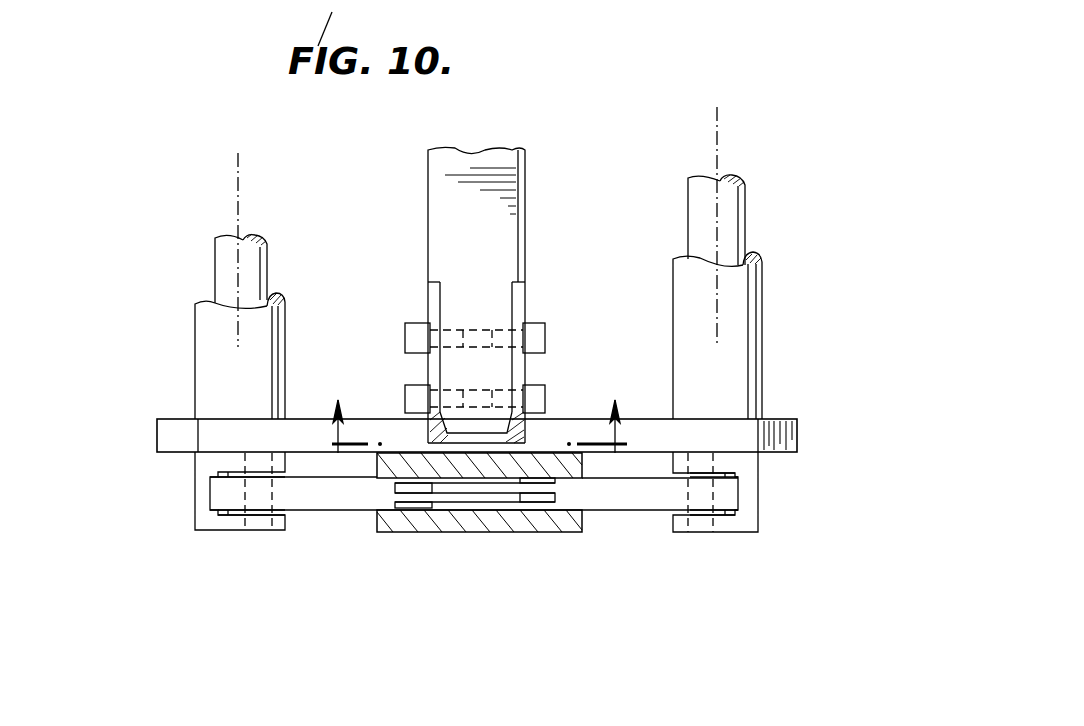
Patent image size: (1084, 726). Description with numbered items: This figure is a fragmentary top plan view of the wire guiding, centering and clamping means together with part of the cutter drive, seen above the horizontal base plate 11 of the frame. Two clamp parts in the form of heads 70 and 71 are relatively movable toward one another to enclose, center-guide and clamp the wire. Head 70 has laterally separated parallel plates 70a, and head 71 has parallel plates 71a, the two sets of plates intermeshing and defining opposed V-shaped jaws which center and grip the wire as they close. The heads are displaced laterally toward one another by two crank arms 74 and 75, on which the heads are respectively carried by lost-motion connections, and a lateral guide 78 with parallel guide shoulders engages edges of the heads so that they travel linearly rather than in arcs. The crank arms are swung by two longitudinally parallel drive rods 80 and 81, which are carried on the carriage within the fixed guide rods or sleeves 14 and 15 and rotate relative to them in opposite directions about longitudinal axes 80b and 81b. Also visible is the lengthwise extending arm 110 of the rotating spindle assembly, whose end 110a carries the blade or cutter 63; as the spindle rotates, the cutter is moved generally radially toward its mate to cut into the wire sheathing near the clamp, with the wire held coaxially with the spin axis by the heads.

The arm 110 is at (487, 165).
The end of arm 110a is at (450, 368).
The blade or cutter 63 is at (480, 430).
The longitudinal axis 80b is at (238, 183).
The longitudinal axis 81b is at (718, 140).
The drive rod 80 is at (225, 266).
The drive rod 81 is at (727, 222).
The guide rod 14 is at (202, 360).
The guide rod 15 is at (738, 355).
The base plate 11 is at (484, 413).
The crank arm 74 is at (205, 513).
The crank arm 75 is at (743, 517).
The head 70 is at (328, 510).
The head 71 is at (636, 510).
The parallel plates 70a is at (418, 480).
The parallel plates 71a is at (475, 487).
The lateral guide 78 is at (544, 528).